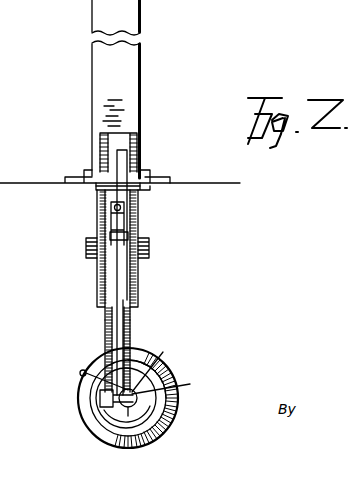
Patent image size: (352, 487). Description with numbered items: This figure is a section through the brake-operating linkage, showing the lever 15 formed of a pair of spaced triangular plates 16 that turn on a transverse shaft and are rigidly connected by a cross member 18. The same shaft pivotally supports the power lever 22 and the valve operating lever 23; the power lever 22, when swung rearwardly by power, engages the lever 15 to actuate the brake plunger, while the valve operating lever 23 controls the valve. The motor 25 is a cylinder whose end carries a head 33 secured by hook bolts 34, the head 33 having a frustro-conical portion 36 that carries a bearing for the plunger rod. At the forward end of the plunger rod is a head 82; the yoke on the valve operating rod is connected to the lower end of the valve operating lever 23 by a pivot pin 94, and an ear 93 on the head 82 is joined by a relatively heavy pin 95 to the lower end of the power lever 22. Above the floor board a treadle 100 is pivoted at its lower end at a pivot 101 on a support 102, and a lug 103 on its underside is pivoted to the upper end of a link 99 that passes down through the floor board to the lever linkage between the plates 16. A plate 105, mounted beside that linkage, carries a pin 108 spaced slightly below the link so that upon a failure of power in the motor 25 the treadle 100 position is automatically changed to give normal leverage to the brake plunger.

The treadle 100 is at (141, 100).
The lug 103 is at (134, 143).
The link 99 is at (130, 185).
The pivot 101 is at (88, 172).
The support 102 is at (170, 179).
The cross member 18 is at (98, 191).
The lever 15 is at (145, 215).
The plate 105 is at (112, 220).
The pin 108 is at (136, 240).
The triangular plate 16 is at (149, 266).
The valve operating lever 23 is at (132, 318).
The power lever 22 is at (104, 335).
The head 82 is at (150, 353).
The pivot pin 94 is at (176, 374).
The hook bolt 34 is at (80, 373).
The frustro-conical portion 36 is at (178, 392).
The motor 25 is at (185, 419).
The pin 95 is at (100, 399).
The head 33 is at (98, 412).
The ear 93 is at (118, 420).